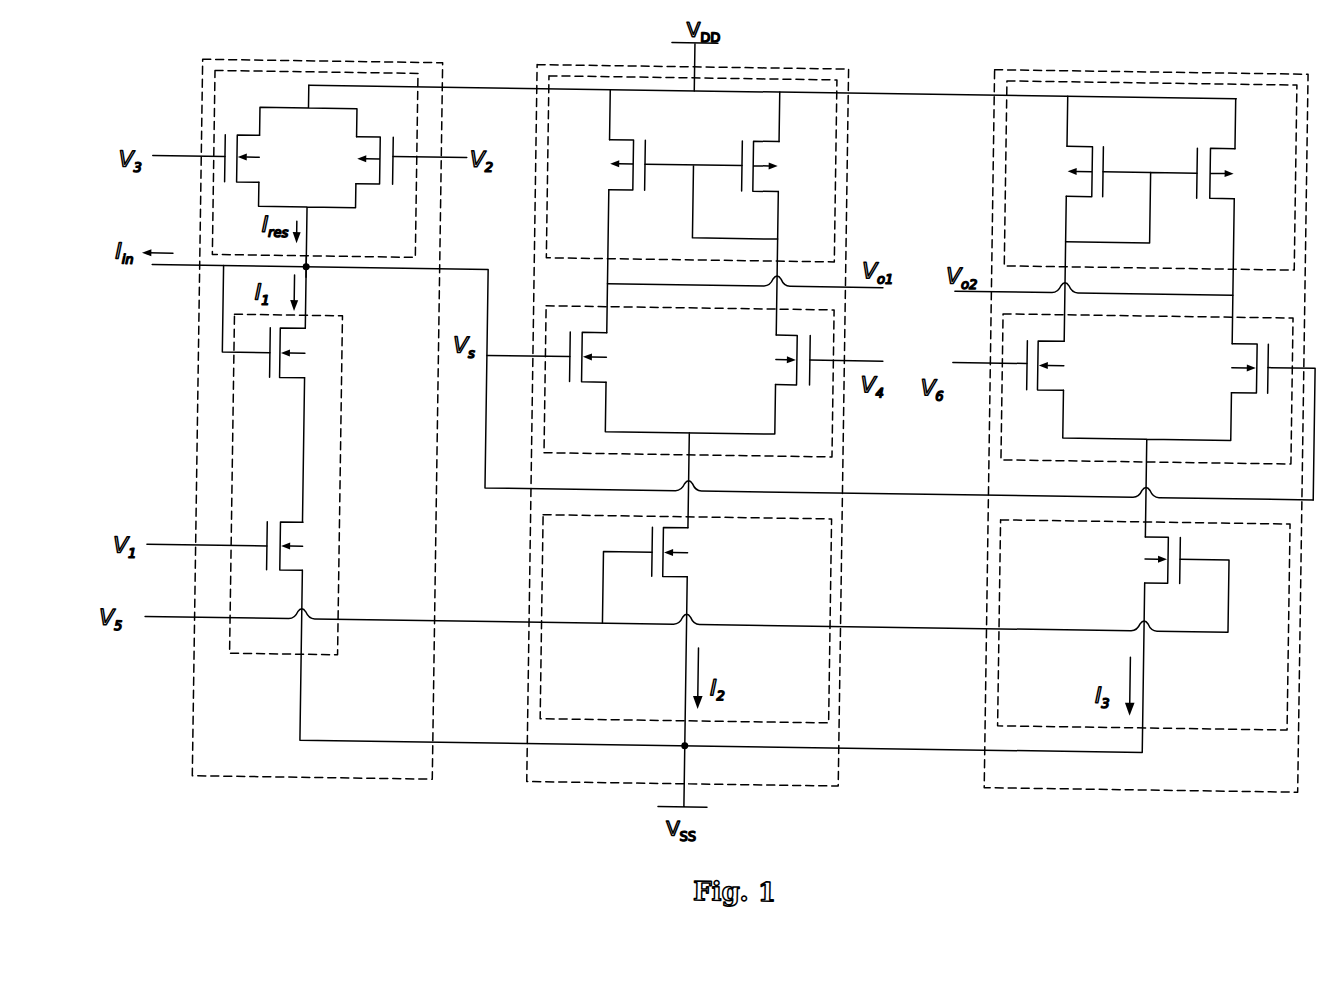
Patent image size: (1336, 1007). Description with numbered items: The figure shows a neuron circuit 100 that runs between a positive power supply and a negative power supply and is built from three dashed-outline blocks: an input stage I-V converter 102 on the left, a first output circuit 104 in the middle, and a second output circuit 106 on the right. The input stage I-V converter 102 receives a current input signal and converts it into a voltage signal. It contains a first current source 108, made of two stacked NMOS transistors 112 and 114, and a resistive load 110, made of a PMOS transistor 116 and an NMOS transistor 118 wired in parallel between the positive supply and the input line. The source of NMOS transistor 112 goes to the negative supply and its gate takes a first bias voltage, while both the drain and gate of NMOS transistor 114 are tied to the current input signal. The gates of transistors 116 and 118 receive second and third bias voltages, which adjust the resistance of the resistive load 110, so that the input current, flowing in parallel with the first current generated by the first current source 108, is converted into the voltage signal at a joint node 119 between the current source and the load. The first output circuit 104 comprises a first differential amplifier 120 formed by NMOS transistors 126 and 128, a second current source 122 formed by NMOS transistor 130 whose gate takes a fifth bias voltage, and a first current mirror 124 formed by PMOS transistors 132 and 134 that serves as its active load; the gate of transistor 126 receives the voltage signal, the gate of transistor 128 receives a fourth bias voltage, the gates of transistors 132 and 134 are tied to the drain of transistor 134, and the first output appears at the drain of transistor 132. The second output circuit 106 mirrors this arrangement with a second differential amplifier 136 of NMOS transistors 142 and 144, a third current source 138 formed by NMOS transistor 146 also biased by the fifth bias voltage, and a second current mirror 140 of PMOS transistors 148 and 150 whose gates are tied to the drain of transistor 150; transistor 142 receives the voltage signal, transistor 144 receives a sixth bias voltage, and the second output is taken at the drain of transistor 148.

The neuron circuit 100 is at (152, 826).
The input stage I-V converter 102 is at (197, 758).
The first output circuit 104 is at (532, 760).
The second output circuit 106 is at (989, 757).
The first current source 108 is at (340, 492).
The resistive load 110 is at (413, 201).
The NMOS transistor 112 is at (280, 533).
The NMOS transistor 114 is at (283, 369).
The PMOS transistor 116 is at (379, 147).
The NMOS transistor 118 is at (242, 146).
The joint node 119 is at (308, 278).
The first differential amplifier 120 is at (833, 435).
The second current source 122 is at (544, 685).
The first current mirror 124 is at (834, 188).
The NMOS transistor 126 is at (610, 357).
The NMOS transistor 128 is at (770, 359).
The NMOS transistor 130 is at (665, 569).
The PMOS transistor 132 is at (632, 154).
The PMOS transistor 134 is at (756, 154).
The second differential amplifier 136 is at (1002, 438).
The third current source 138 is at (1002, 681).
The second current mirror 140 is at (1003, 192).
The NMOS transistor 142 is at (1228, 368).
The NMOS transistor 144 is at (1067, 366).
The NMOS transistor 146 is at (1167, 580).
The PMOS transistor 148 is at (1213, 161).
The PMOS transistor 150 is at (1089, 160).